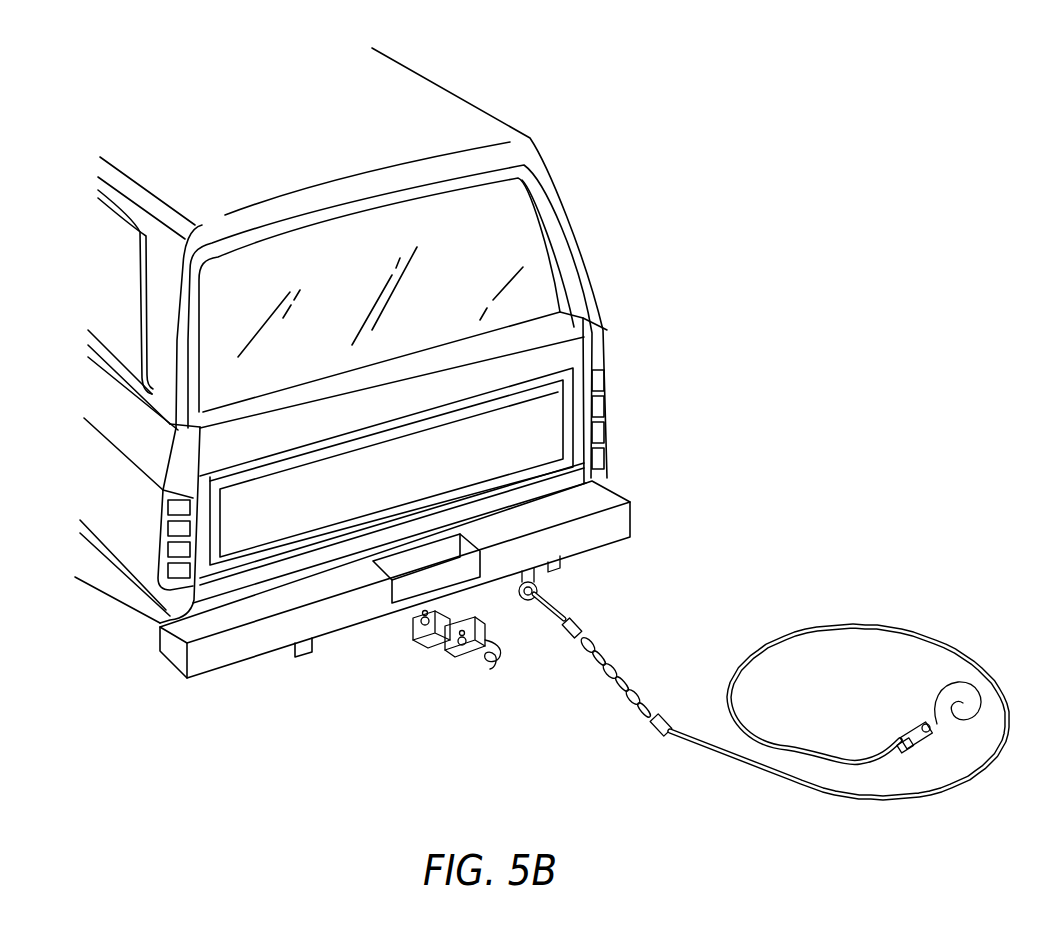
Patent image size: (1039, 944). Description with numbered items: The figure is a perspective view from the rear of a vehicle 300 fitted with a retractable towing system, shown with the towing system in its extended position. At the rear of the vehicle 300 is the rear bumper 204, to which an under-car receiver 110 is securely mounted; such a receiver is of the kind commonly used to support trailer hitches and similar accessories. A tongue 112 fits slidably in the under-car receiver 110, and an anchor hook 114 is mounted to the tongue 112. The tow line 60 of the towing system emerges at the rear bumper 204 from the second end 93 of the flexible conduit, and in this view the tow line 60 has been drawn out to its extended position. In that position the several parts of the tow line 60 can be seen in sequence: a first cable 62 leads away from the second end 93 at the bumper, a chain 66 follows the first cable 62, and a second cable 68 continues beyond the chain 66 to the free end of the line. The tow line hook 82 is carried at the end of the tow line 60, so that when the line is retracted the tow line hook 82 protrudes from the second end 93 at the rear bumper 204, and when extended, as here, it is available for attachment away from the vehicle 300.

The vehicle 300 is at (548, 136).
The rear bumper 204 is at (550, 568).
The second end 93 is at (508, 592).
The first cable 62 is at (550, 605).
The chain 66 is at (618, 675).
The tow line 60 is at (633, 670).
The second cable 68 is at (807, 788).
The tow line hook 82 is at (947, 690).
The under-car receiver 110 is at (417, 620).
The tongue 112 is at (450, 642).
The anchor hook 114 is at (490, 668).